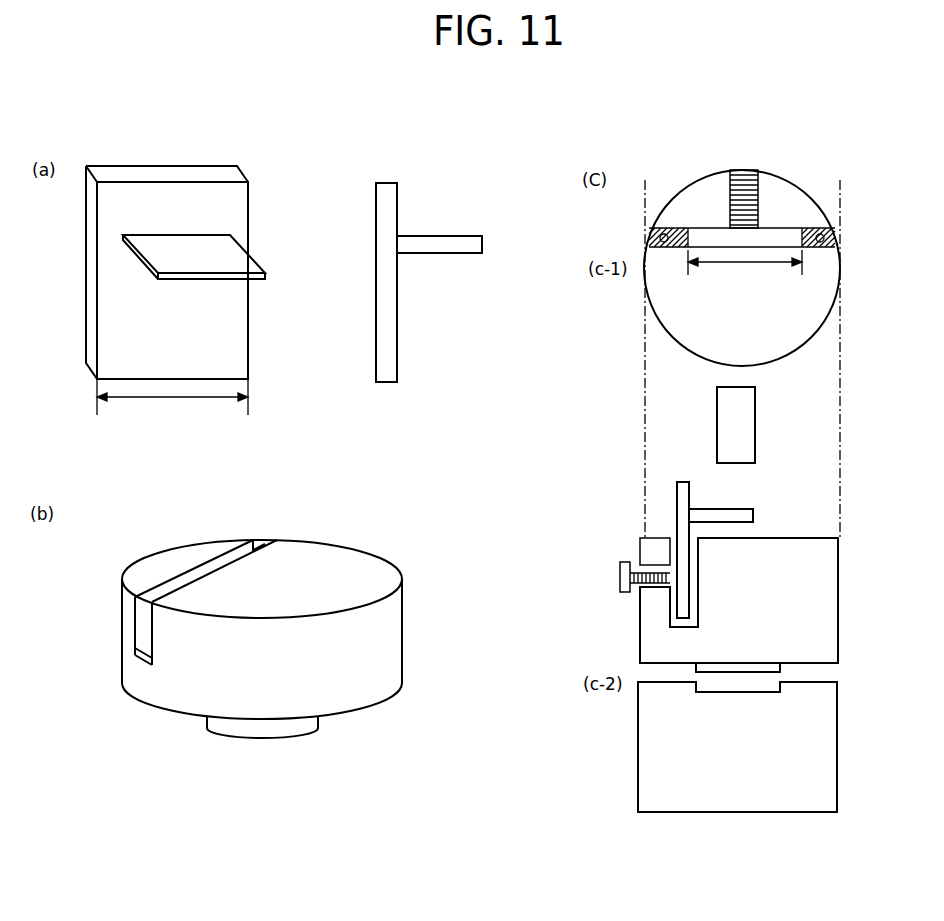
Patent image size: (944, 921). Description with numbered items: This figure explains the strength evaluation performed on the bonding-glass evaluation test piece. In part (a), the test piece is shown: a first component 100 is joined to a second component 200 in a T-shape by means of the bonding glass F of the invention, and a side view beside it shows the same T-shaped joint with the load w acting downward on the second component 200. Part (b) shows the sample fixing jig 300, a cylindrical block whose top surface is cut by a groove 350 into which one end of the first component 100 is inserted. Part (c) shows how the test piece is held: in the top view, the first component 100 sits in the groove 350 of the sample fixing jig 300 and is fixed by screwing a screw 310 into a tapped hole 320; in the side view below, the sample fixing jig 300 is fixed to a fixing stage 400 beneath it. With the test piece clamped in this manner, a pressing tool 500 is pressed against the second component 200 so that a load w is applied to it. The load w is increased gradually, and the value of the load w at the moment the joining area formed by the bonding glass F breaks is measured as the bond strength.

The first component 100 is at (234, 203).
The second component 200 is at (261, 270).
The sample fixing jig 300 is at (390, 644).
The screw 310 is at (743, 135).
The tapped hole 320 is at (759, 188).
The groove 350 is at (139, 627).
The fixing stage 400 is at (737, 747).
The pressing tool 500 is at (757, 425).
The bonding glass F is at (235, 238).
The load w is at (433, 226).